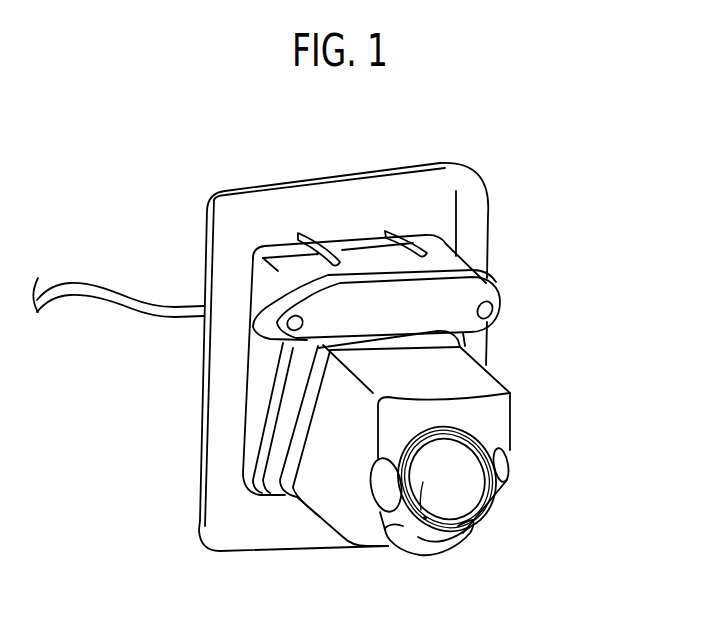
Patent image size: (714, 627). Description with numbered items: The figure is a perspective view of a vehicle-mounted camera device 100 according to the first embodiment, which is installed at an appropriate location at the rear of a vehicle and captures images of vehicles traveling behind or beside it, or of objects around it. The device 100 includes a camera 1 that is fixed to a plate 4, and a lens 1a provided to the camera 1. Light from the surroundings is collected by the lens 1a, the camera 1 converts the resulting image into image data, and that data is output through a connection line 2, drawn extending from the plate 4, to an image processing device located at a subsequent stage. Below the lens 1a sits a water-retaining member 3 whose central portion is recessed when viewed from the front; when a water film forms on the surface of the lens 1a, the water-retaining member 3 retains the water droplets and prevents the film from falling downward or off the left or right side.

The vehicle-mounted camera device 100 is at (528, 265).
The camera 1 is at (327, 500).
The lens 1a is at (470, 484).
The connection line 2 is at (82, 287).
The water-retaining member 3 is at (440, 543).
The plate 4 is at (433, 218).